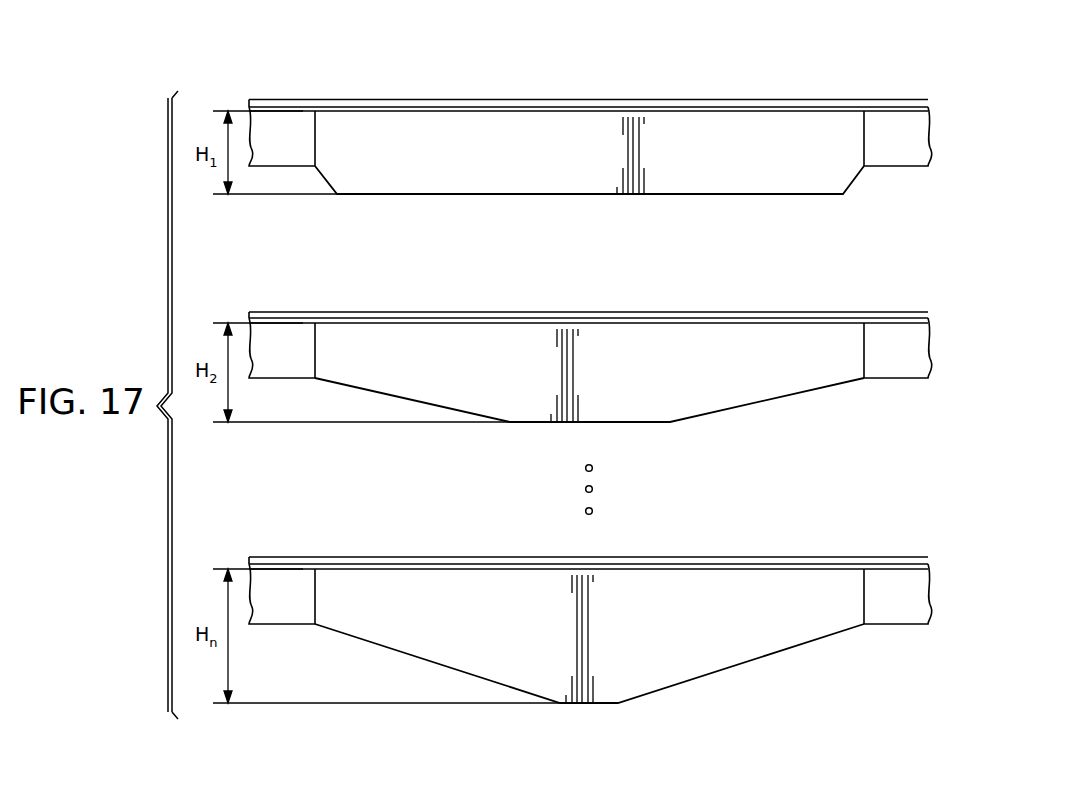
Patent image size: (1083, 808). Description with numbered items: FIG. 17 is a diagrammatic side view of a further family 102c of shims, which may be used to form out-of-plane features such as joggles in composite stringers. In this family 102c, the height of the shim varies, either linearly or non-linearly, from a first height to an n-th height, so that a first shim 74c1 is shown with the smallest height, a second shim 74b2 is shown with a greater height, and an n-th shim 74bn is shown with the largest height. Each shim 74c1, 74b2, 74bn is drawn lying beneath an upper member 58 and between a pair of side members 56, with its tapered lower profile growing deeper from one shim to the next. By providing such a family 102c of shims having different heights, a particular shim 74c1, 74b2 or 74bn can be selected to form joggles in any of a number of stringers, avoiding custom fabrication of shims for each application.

The family of shims 102c is at (722, 83).
The cover plate 58 is at (413, 99).
The base member 56 is at (883, 157).
The shim 74c1 is at (440, 185).
The shim 74b2 is at (775, 390).
The shim 74bn is at (745, 657).